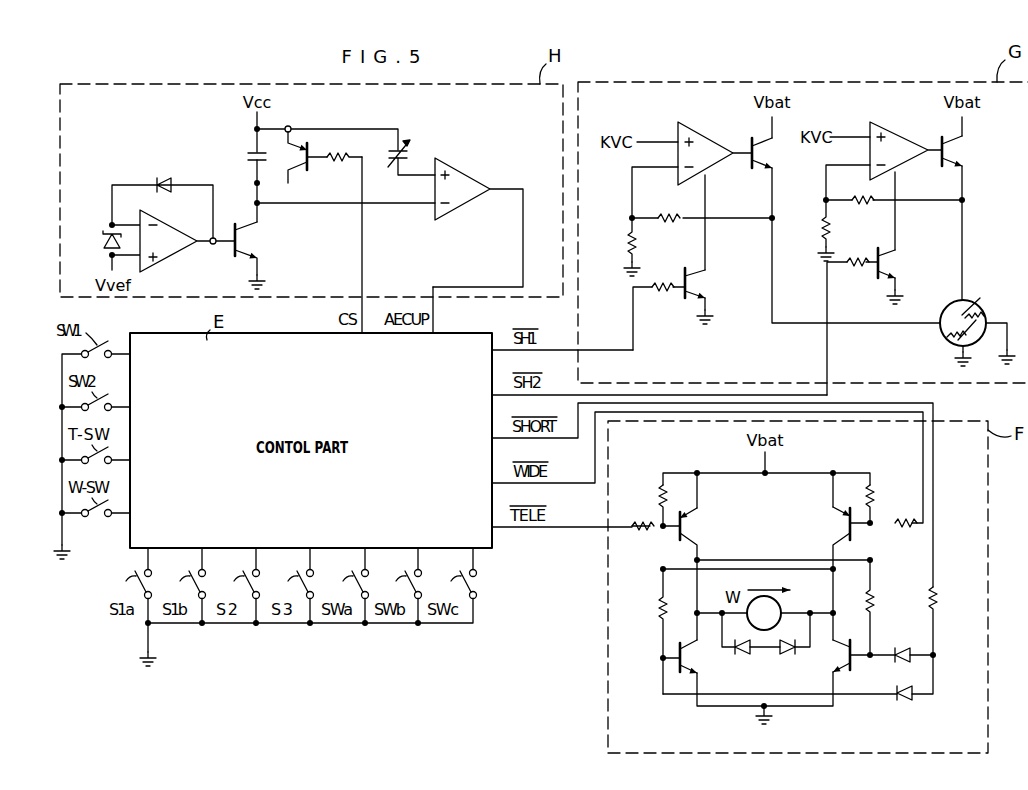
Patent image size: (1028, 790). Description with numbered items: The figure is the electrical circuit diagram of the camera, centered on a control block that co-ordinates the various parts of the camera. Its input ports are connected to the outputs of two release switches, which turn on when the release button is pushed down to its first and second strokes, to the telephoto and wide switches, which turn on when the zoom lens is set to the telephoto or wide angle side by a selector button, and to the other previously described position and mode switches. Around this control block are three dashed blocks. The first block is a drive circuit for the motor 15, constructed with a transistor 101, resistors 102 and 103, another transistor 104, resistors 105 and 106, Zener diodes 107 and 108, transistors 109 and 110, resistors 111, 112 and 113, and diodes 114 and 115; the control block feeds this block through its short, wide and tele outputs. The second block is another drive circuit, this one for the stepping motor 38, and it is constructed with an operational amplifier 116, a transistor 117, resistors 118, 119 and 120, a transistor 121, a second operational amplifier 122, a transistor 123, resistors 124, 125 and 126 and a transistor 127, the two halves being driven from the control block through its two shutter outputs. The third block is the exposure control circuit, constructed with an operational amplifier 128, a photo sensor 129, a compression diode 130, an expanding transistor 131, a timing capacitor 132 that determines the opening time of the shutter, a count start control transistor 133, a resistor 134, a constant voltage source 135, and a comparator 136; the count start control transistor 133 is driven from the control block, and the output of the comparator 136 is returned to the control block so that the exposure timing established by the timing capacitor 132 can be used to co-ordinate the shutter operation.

The motor 15 is at (783, 606).
The stepping motor 38 is at (977, 306).
The transistor 101 is at (698, 528).
The resistor 102 is at (660, 492).
The resistor 103 is at (640, 538).
The transistor 104 is at (845, 528).
The resistor 105 is at (876, 498).
The resistor 106 is at (904, 534).
The Zener diode 107 is at (745, 658).
The Zener diode 108 is at (792, 658).
The transistor 109 is at (686, 688).
The transistor 110 is at (843, 690).
The resistor 111 is at (657, 615).
The resistor 112 is at (866, 602).
The resistor 113 is at (940, 600).
The diode 114 is at (903, 646).
The diode 115 is at (906, 704).
The operational amplifier 116 is at (713, 137).
The transistor 117 is at (757, 173).
The resistor 118 is at (627, 243).
The resistor 119 is at (672, 212).
The resistor 120 is at (667, 300).
The transistor 121 is at (711, 284).
The operational amplifier 122 is at (900, 135).
The transistor 123 is at (955, 152).
The resistor 124 is at (820, 228).
The resistor 125 is at (858, 210).
The resistor 126 is at (860, 276).
The transistor 127 is at (897, 264).
The operational amplifier 128 is at (183, 262).
The photo sensor 129 is at (103, 241).
The compression diode 130 is at (165, 177).
The expanding transistor 131 is at (234, 260).
The timing capacitor 132 is at (246, 156).
The count start control transistor 133 is at (305, 143).
The resistor 134 is at (343, 164).
The constant voltage source 135 is at (392, 166).
The comparator 136 is at (466, 172).